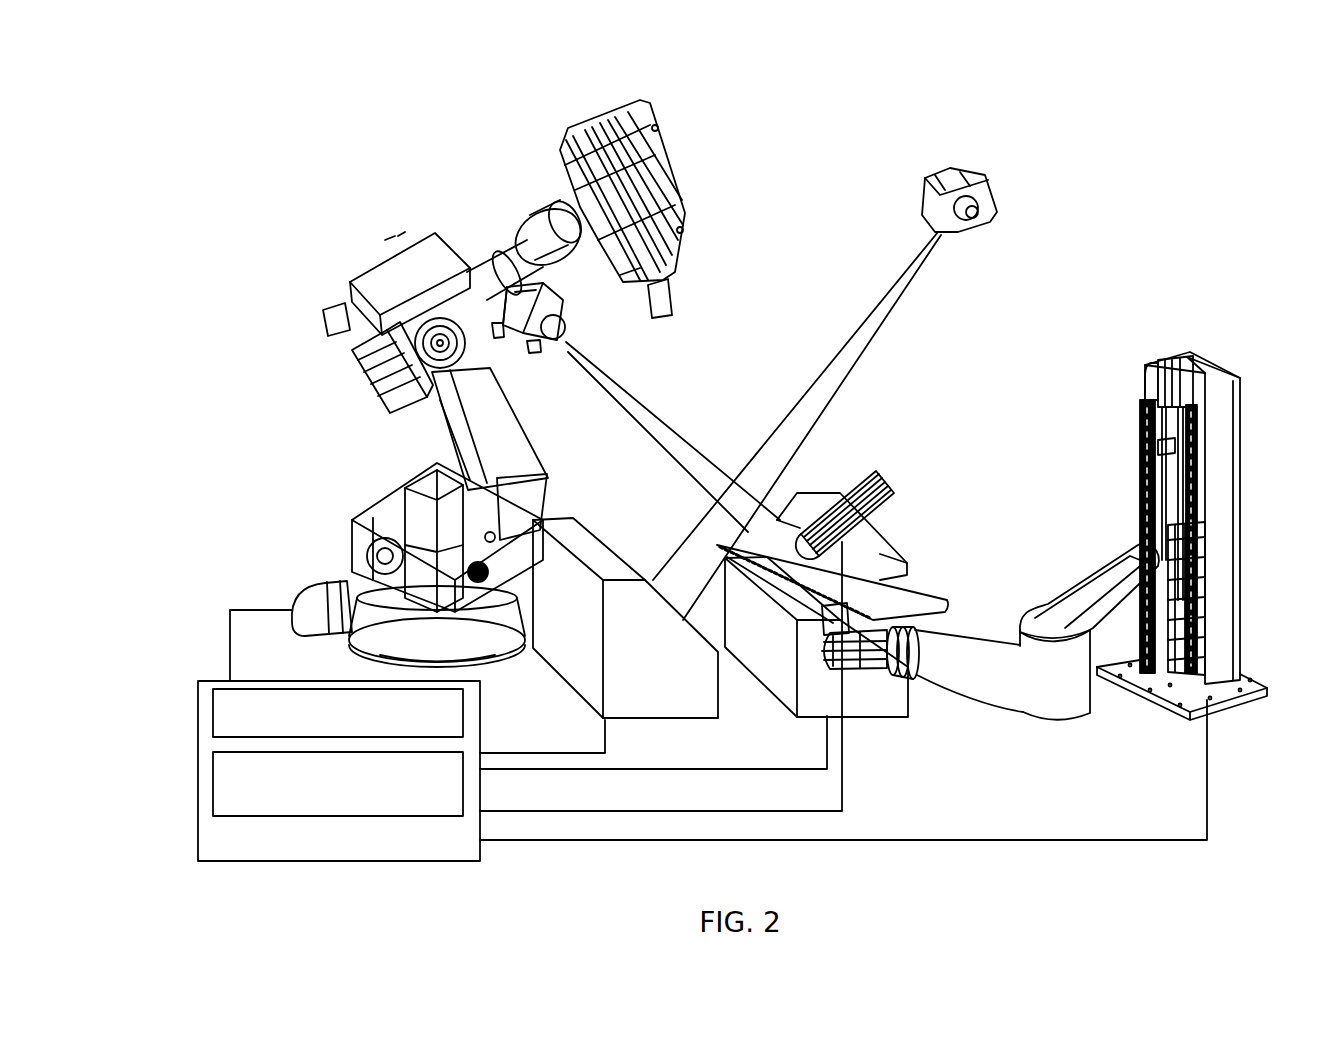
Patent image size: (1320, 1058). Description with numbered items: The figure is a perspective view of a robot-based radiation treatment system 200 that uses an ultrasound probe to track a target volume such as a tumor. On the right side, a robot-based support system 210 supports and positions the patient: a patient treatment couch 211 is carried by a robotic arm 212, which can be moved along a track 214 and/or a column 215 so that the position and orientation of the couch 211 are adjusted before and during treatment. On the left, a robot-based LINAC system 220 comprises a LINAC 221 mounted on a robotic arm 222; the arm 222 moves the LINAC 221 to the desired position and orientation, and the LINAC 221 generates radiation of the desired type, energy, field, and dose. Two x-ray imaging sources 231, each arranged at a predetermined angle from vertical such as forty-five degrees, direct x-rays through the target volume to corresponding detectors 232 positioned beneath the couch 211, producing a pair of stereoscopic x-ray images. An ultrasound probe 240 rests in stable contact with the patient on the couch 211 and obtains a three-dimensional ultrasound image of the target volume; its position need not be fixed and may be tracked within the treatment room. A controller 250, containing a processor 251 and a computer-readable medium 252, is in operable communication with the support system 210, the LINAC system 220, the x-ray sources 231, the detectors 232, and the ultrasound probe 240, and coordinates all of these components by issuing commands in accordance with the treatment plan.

The system 200 is at (1167, 101).
The robot-based support system 210 is at (1152, 693).
The patient treatment couch 211 is at (883, 578).
The robotic arm 212 is at (977, 637).
The track 214 is at (1136, 412).
The column 215 is at (1217, 350).
The robot-based linear accelerator (LINAC) system 220 is at (416, 216).
The LINAC 221 is at (588, 110).
The robotic arm 222 is at (444, 400).
The x-ray imaging sources 231 is at (930, 226).
The detectors 232 is at (797, 720).
The ultrasound probe 240 is at (889, 492).
The controller 250 is at (198, 836).
The processor 251 is at (213, 712).
The computer-readable medium 252 is at (213, 780).